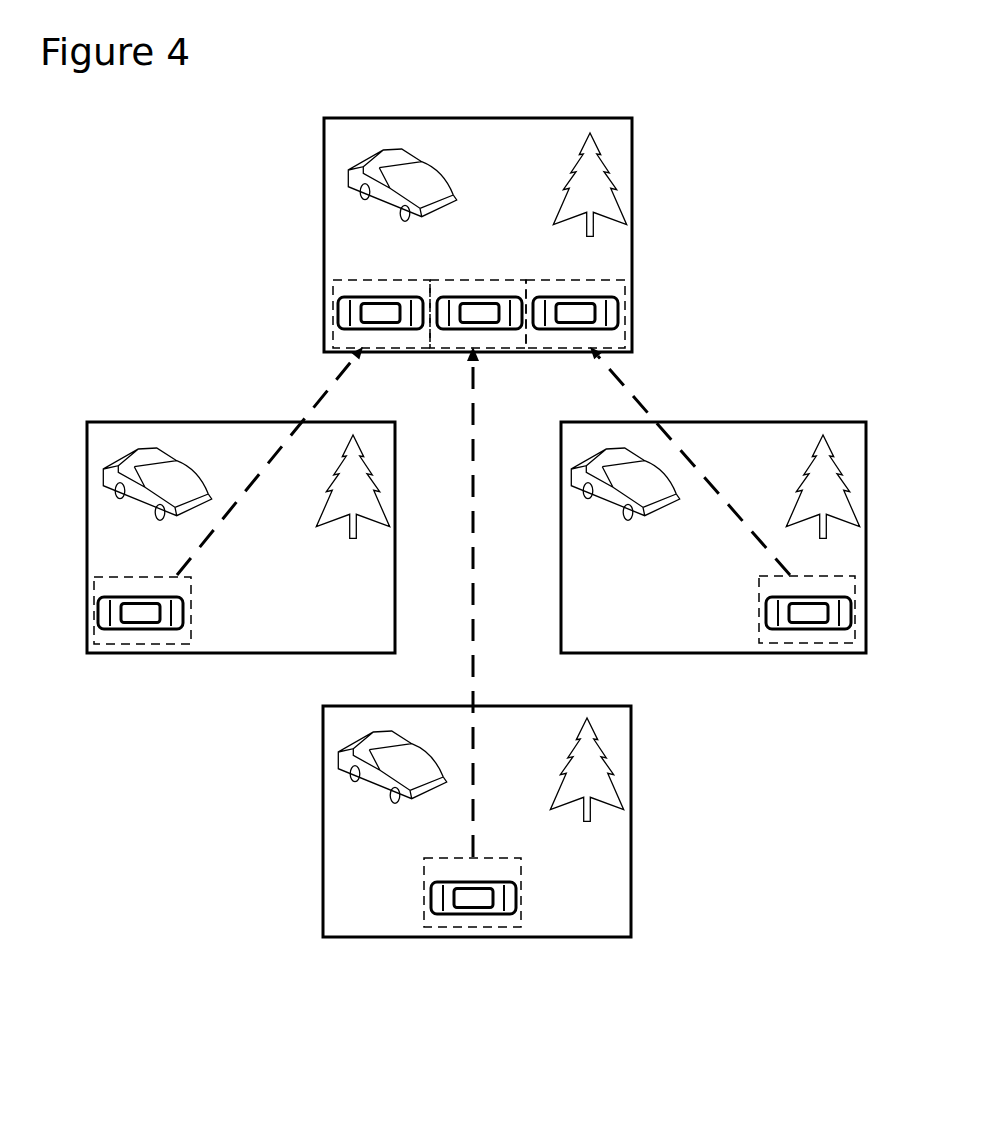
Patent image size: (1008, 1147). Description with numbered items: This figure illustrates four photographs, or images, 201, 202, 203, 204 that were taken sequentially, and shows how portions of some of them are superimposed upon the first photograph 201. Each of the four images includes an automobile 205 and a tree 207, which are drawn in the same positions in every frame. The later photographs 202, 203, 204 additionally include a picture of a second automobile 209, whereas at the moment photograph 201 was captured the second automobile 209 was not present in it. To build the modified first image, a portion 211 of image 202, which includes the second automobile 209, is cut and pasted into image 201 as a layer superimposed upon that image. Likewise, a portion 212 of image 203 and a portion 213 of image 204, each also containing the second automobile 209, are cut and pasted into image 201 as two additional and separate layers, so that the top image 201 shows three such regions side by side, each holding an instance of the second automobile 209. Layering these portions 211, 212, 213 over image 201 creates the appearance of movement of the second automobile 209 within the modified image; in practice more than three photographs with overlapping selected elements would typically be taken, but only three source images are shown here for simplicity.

The first photograph 201 is at (323, 148).
The second photograph 202 is at (87, 443).
The third photograph 203 is at (323, 738).
The fourth photograph 204 is at (561, 455).
The automobile 205 is at (347, 182).
The tree 207 is at (617, 202).
The second automobile 209 is at (183, 615).
The portion of image 202 211 is at (333, 314).
The portion of image 203 212 is at (458, 348).
The portion of image 204 213 is at (625, 313).